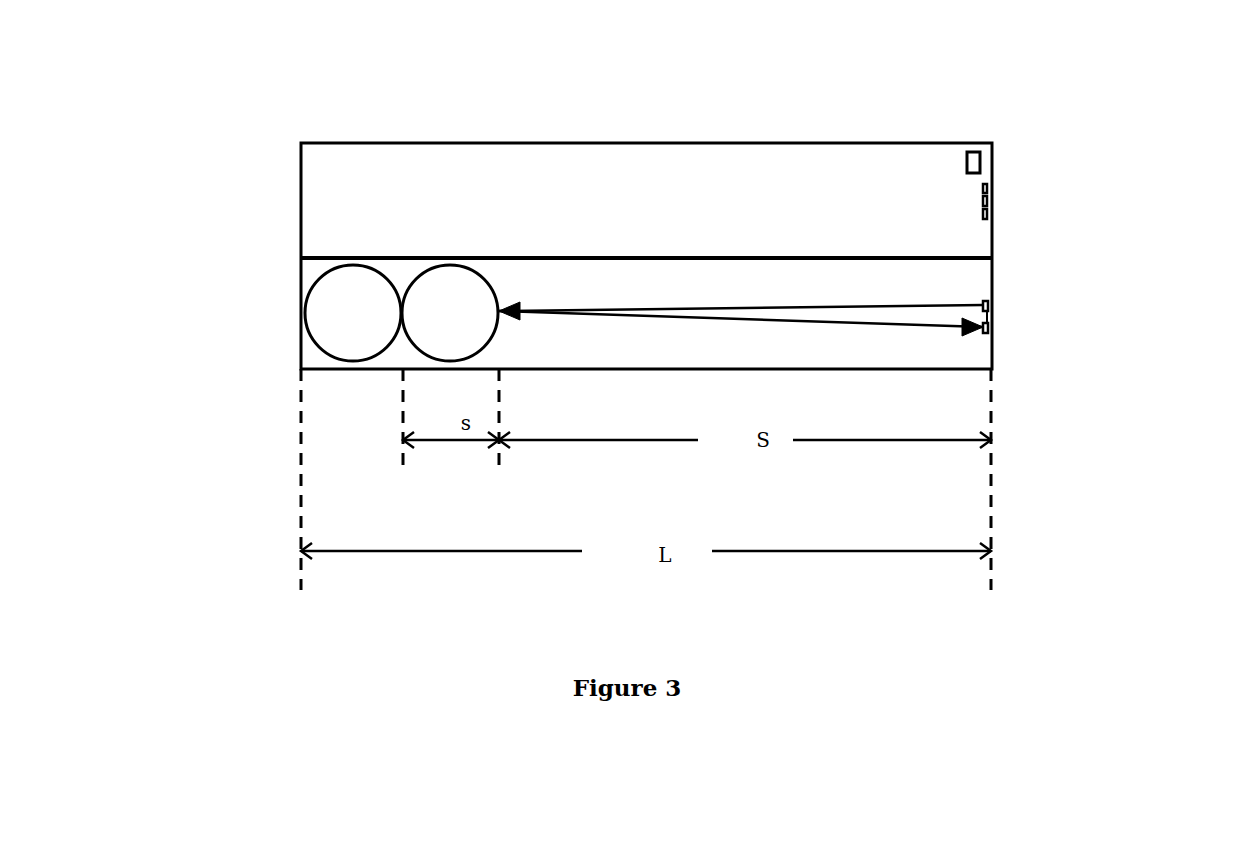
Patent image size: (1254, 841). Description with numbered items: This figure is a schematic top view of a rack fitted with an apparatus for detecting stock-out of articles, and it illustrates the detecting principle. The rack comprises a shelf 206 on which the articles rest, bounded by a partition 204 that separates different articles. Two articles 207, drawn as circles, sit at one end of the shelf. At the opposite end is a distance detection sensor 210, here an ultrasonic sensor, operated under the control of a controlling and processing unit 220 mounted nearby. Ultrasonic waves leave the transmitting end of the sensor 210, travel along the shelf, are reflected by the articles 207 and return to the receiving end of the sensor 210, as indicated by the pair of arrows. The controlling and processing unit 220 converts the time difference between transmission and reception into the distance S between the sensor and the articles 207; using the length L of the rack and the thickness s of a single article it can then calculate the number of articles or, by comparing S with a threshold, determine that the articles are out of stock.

The shelf 206 is at (363, 192).
The partition 204 is at (536, 257).
The controlling and processing unit 220 is at (973, 163).
The articles 207 is at (340, 319).
The distance detection sensor 210 is at (990, 318).